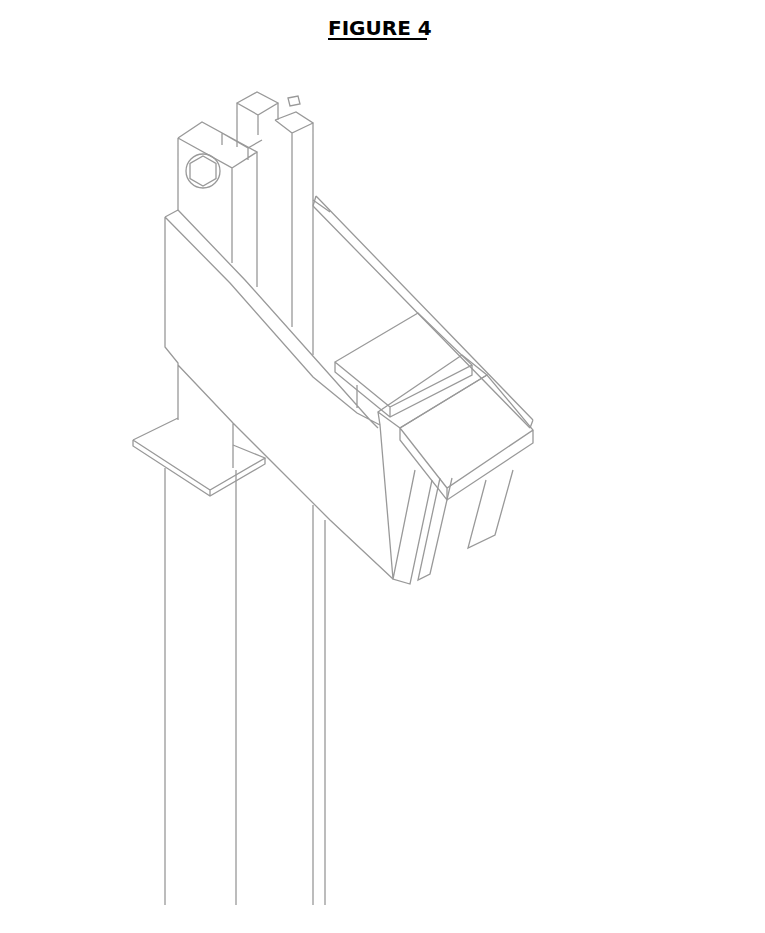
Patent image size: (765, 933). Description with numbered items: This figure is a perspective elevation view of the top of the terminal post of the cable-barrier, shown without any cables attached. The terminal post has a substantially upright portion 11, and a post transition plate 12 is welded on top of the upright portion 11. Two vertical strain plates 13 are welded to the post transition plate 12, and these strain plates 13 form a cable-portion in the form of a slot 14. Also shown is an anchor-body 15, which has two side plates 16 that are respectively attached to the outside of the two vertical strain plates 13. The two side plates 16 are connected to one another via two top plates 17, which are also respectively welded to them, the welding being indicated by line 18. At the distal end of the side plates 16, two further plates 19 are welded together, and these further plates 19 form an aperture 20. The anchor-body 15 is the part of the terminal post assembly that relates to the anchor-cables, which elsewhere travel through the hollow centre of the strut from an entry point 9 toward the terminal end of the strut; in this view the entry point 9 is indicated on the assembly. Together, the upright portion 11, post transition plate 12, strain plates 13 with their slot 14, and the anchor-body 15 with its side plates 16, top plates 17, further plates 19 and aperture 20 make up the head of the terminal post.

The entry point 9 is at (445, 419).
The upright portion 11 is at (188, 694).
The post transition plate 12 is at (188, 446).
The vertical strain plates 13 is at (232, 178).
The slot 14 is at (222, 138).
The anchor-body 15 is at (517, 417).
The side plates 16 is at (307, 382).
The top plates 17 is at (478, 437).
The weld 18 is at (357, 408).
The further plates 19 is at (428, 563).
The aperture 20 is at (453, 543).